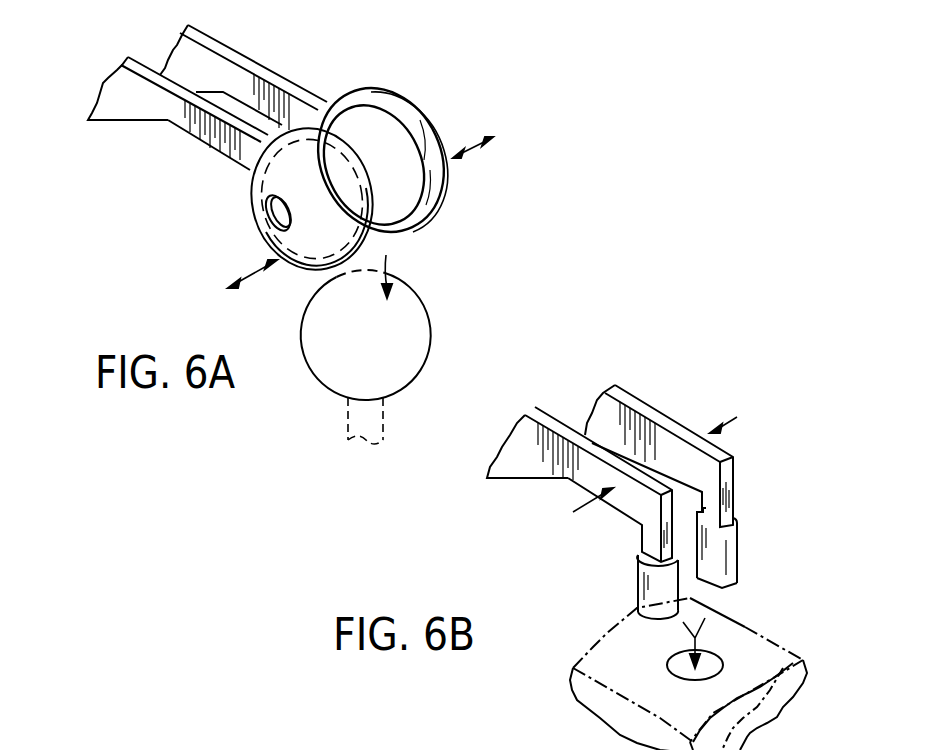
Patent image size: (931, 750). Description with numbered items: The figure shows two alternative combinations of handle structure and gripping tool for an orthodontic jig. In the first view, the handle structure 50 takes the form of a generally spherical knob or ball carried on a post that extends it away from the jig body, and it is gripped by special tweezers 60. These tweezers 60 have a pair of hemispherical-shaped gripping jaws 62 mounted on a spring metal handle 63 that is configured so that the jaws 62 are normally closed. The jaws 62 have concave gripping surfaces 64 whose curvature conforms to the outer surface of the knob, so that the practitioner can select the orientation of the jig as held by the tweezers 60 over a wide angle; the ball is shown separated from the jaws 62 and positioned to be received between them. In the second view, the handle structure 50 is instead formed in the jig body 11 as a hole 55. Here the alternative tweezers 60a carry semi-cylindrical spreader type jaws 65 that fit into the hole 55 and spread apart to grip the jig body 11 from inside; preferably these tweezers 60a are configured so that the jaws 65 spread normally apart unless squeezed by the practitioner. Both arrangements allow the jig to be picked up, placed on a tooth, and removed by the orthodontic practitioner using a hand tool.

In FIG. 6A, the tweezers 60 is at (205, 228).
In FIG. 6B, the tweezers 60a is at (770, 458).
In FIG. 6A, the gripping jaws 62 is at (355, 90).
In FIG. 6A, the spring metal handle 63 is at (142, 123).
In FIG. 6B, the spring metal handle 63 is at (520, 480).
In FIG. 6A, the concave gripping surfaces 64 is at (393, 189).
In FIG. 6A, the handle structure 50 is at (432, 310).
In FIG. 6B, the spreader type jaws 65 is at (738, 575).
In FIG. 6B, the jig body 11 is at (764, 631).
In FIG. 6B, the hole 55 is at (667, 657).